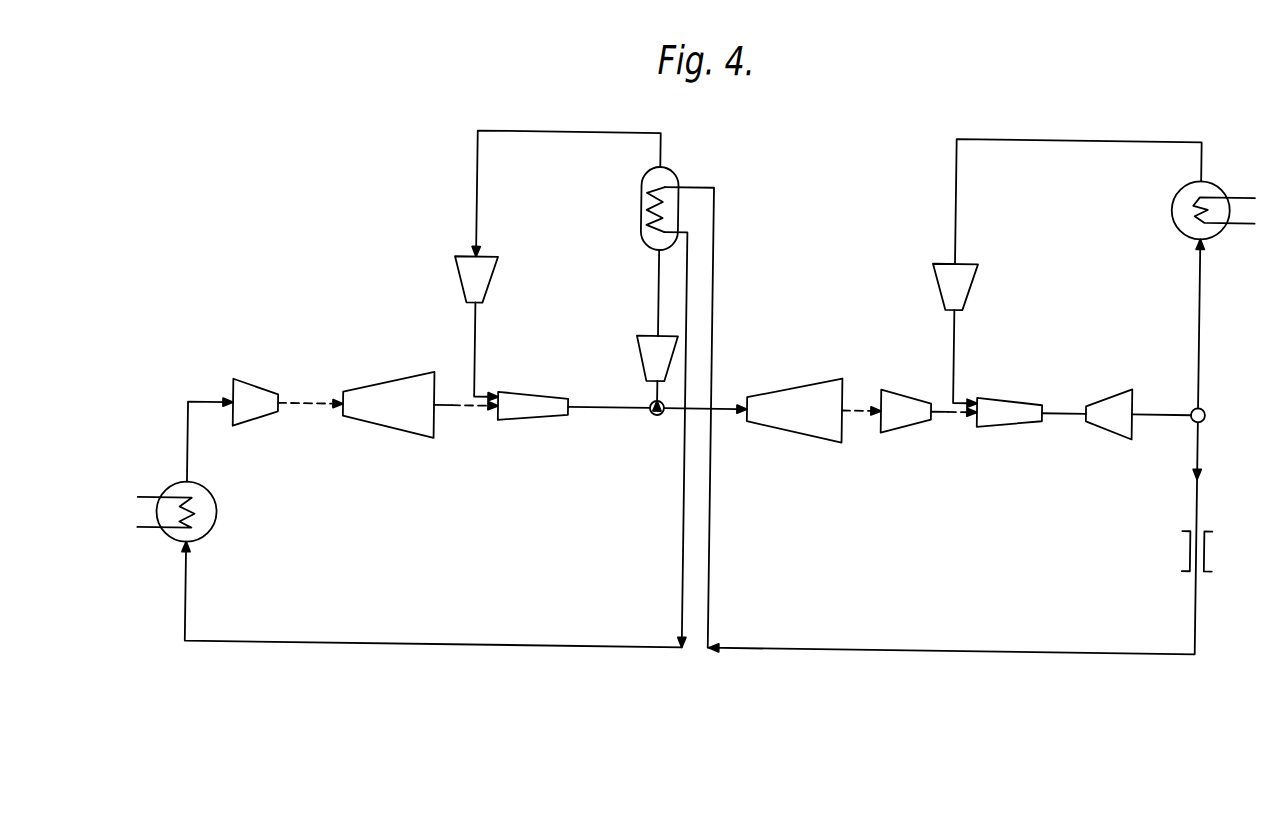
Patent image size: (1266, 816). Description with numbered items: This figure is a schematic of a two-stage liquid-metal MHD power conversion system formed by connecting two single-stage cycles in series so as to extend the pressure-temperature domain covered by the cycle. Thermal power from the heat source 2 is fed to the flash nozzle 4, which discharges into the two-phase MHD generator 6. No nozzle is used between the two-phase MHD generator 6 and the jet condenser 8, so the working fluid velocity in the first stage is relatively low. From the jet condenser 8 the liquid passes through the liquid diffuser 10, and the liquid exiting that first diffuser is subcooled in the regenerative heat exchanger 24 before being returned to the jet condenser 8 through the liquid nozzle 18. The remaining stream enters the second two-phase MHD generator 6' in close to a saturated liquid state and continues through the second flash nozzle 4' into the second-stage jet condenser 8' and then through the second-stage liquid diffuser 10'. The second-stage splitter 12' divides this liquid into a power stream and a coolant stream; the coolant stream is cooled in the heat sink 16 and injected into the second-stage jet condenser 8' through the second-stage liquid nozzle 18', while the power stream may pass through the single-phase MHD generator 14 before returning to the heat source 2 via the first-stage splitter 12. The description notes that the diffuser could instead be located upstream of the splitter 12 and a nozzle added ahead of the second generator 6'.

The heat source 2 is at (184, 540).
The flash nozzle 4 is at (262, 407).
The two-phase MHD generator 6 is at (388, 396).
The jet condenser 8 is at (536, 400).
The liquid diffuser 10 is at (618, 340).
The splitter 12 is at (645, 430).
The single-phase MHD generator 14 is at (1210, 538).
The heat sink 16 is at (1205, 221).
The liquid nozzle 18 is at (452, 279).
The regenerative heat exchanger 24 is at (660, 178).
The second flash nozzle 4' is at (911, 410).
The second two-phase MHD generator 6' is at (794, 398).
The second-stage jet condenser 8' is at (1011, 417).
The second-stage liquid diffuser 10' is at (1111, 412).
The second-stage splitter 12' is at (1223, 432).
The second-stage liquid nozzle 18' is at (938, 287).